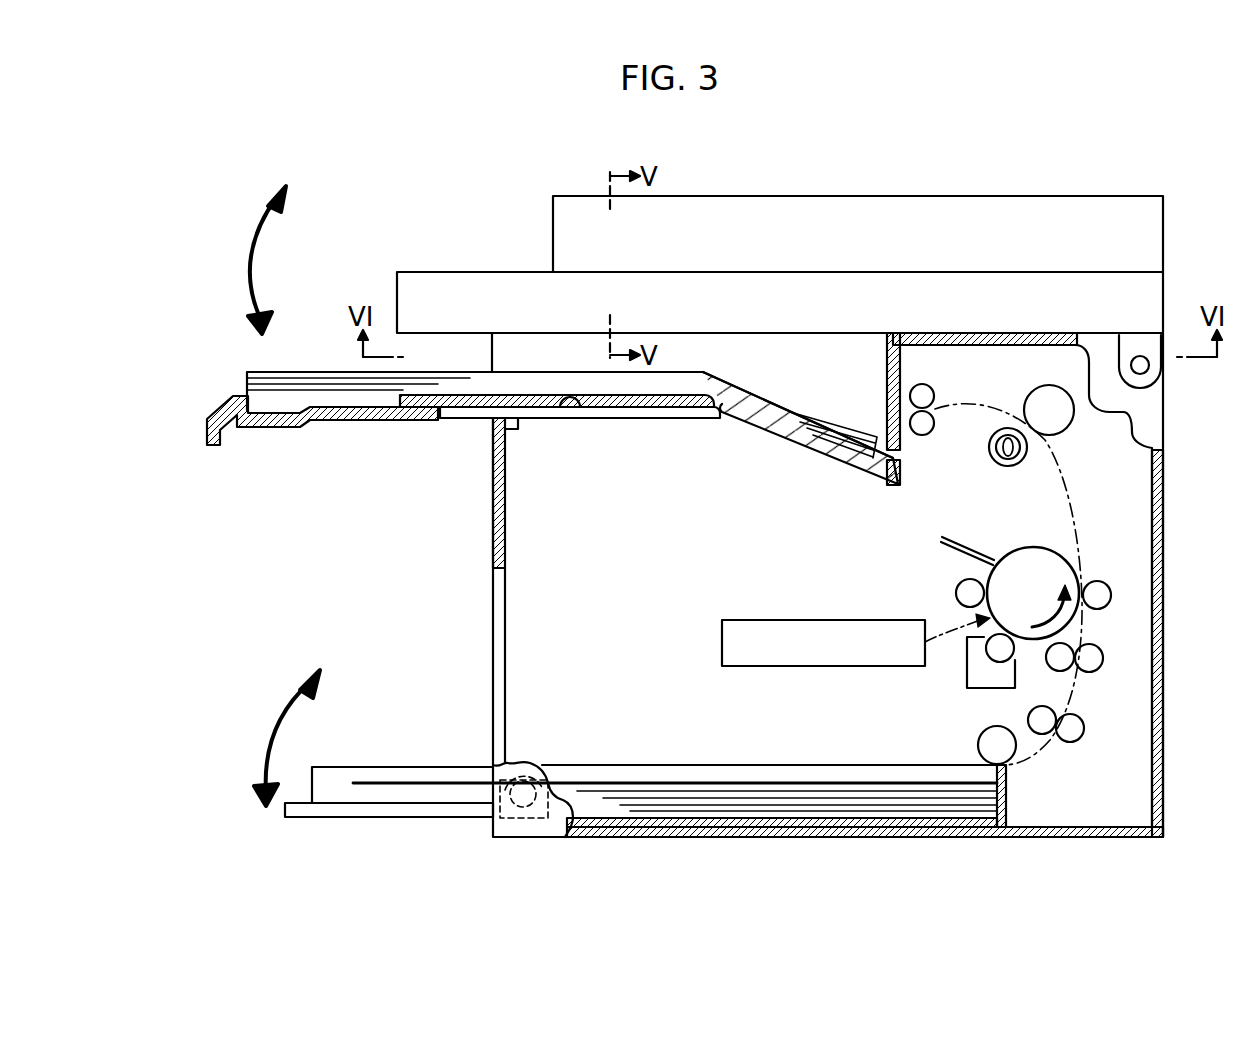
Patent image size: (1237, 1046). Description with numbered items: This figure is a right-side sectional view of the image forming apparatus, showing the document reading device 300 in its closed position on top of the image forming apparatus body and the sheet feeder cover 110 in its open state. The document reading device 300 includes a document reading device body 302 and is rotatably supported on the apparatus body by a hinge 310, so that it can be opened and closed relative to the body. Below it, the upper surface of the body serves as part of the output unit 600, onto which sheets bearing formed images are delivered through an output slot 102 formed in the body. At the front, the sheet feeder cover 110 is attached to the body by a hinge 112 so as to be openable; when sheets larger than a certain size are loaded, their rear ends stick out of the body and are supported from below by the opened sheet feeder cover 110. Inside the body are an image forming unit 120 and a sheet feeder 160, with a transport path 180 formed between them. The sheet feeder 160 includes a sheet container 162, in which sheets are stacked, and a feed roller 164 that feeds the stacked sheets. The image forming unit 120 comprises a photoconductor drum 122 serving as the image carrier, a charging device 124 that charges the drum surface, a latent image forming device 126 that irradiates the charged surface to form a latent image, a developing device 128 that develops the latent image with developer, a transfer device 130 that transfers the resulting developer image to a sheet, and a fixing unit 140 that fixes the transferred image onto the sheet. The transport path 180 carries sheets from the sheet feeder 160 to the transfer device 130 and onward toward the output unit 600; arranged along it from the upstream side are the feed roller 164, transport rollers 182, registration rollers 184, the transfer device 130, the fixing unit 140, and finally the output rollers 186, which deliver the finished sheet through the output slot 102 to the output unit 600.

The output slot 102 is at (888, 385).
The sheet feeder cover 110 is at (318, 818).
The hinge 112 is at (535, 808).
The image forming unit 120 is at (1000, 548).
The photoconductor drum 122 is at (1033, 558).
The charging device 124 is at (958, 593).
The latent image forming device 126 is at (809, 655).
The developing device 128 is at (975, 678).
The transfer device 130 is at (1100, 582).
The fixing unit 140 is at (990, 443).
The sheet feeder 160 is at (1012, 808).
The sheet container 162 is at (606, 810).
The feed roller 164 is at (978, 745).
The transport path 180 is at (1068, 487).
The transport rollers 182 is at (1080, 718).
The registration rollers 184 is at (1098, 652).
The output rollers 186 is at (928, 392).
The document reading device 300 is at (499, 262).
The document reading device body 302 is at (441, 270).
The hinge 310 is at (1140, 363).
The output unit 600 is at (654, 432).